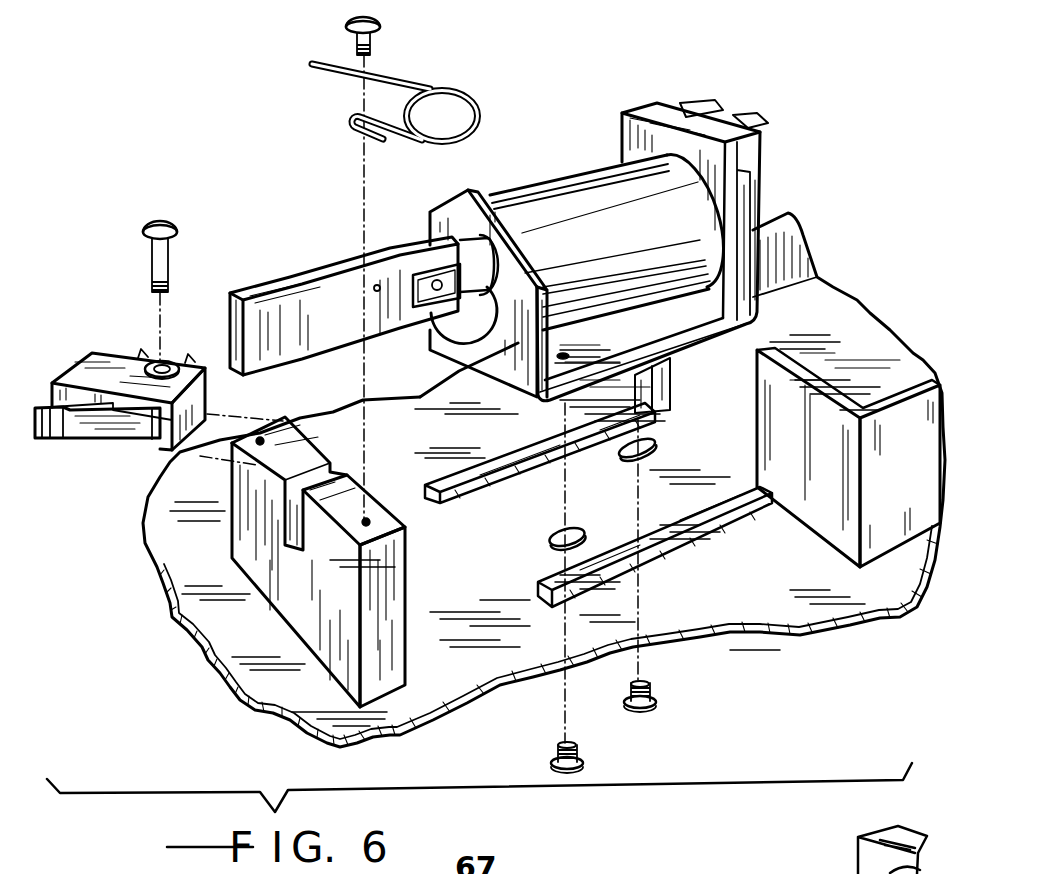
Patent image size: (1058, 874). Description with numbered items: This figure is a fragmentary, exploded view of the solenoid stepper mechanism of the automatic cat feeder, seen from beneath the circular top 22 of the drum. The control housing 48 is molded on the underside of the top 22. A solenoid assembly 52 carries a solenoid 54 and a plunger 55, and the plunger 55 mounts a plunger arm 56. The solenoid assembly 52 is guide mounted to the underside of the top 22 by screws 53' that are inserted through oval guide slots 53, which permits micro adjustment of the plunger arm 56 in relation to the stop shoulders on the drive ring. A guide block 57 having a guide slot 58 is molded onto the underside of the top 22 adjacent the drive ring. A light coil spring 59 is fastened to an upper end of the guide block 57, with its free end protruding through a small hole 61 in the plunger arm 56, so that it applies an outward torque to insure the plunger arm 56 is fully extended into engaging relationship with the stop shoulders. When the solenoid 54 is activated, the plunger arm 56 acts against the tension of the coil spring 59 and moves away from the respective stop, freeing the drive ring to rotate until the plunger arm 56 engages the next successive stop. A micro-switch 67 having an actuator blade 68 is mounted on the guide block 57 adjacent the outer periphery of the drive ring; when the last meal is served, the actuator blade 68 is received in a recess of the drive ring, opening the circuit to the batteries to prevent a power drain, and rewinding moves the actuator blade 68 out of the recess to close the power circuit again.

The circular top 22 is at (765, 593).
The control housing 48 is at (927, 482).
The solenoid assembly 52 is at (643, 96).
The oval guide slots 53 is at (609, 485).
The screws 53' is at (646, 728).
The solenoid 54 is at (645, 253).
The plunger 55 is at (483, 325).
The plunger arm 56 is at (357, 324).
The guide block 57 is at (387, 633).
The guide slot 58 is at (293, 515).
The light coil spring 59 is at (470, 90).
The small hole 61 is at (378, 286).
The micro-switch 67 is at (98, 353).
The actuator blade 68 is at (53, 440).